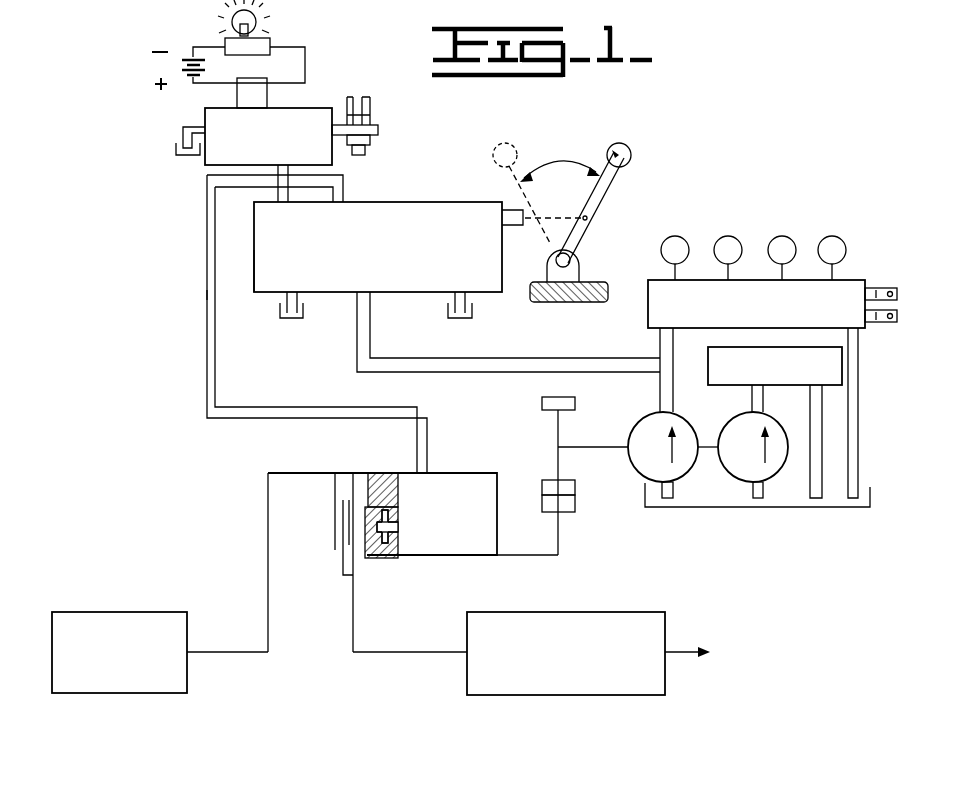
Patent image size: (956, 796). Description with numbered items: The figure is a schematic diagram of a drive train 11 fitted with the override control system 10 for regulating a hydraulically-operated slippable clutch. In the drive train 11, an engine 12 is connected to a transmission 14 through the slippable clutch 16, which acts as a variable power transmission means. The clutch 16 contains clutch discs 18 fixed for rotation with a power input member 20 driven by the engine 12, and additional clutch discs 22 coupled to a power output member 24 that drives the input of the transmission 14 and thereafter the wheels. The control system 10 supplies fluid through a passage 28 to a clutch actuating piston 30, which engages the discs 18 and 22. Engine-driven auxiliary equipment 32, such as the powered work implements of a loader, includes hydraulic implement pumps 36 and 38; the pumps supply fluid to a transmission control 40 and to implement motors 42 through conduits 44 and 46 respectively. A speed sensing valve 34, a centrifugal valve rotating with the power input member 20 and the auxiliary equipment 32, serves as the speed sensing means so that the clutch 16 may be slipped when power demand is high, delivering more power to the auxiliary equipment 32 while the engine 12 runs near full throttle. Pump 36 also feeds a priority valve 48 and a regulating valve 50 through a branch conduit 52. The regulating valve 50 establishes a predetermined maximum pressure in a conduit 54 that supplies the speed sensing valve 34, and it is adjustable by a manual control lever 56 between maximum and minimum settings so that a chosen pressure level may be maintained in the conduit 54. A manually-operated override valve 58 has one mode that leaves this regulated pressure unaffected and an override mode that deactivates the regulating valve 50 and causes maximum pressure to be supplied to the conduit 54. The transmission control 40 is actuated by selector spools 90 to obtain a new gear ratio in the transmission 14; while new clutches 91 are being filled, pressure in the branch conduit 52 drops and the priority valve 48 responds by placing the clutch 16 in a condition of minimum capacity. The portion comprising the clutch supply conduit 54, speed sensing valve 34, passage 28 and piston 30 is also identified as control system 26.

The override control system 10 is at (148, 177).
The drive train 11 is at (237, 519).
The engine 12 is at (73, 617).
The transmission 14 is at (583, 616).
The slippable clutch 16 is at (347, 462).
The clutch discs 18 is at (333, 486).
The power input member 20 is at (212, 654).
The clutch discs 22 is at (342, 562).
The power output member 24 is at (410, 655).
The control system 26 is at (188, 295).
The passage 28 is at (388, 557).
The clutch actuating piston 30 is at (375, 557).
The auxiliary equipment 32 is at (548, 447).
The speed sensing valve 34 is at (457, 550).
The hydraulic implement pump 36 is at (638, 456).
The hydraulic implement pump 38 is at (740, 468).
The transmission control 40 is at (848, 288).
The implement motors 42 is at (727, 378).
The conduit 44 is at (660, 388).
The conduit 46 is at (763, 400).
The priority valve 48 is at (265, 258).
The regulating valve 50 is at (262, 217).
The branch conduit 52 is at (432, 352).
The conduit 54 is at (342, 193).
The manual control lever 56 is at (606, 188).
The override valve 58 is at (324, 97).
The selector spools 90 is at (870, 323).
The clutches 91 is at (684, 217).